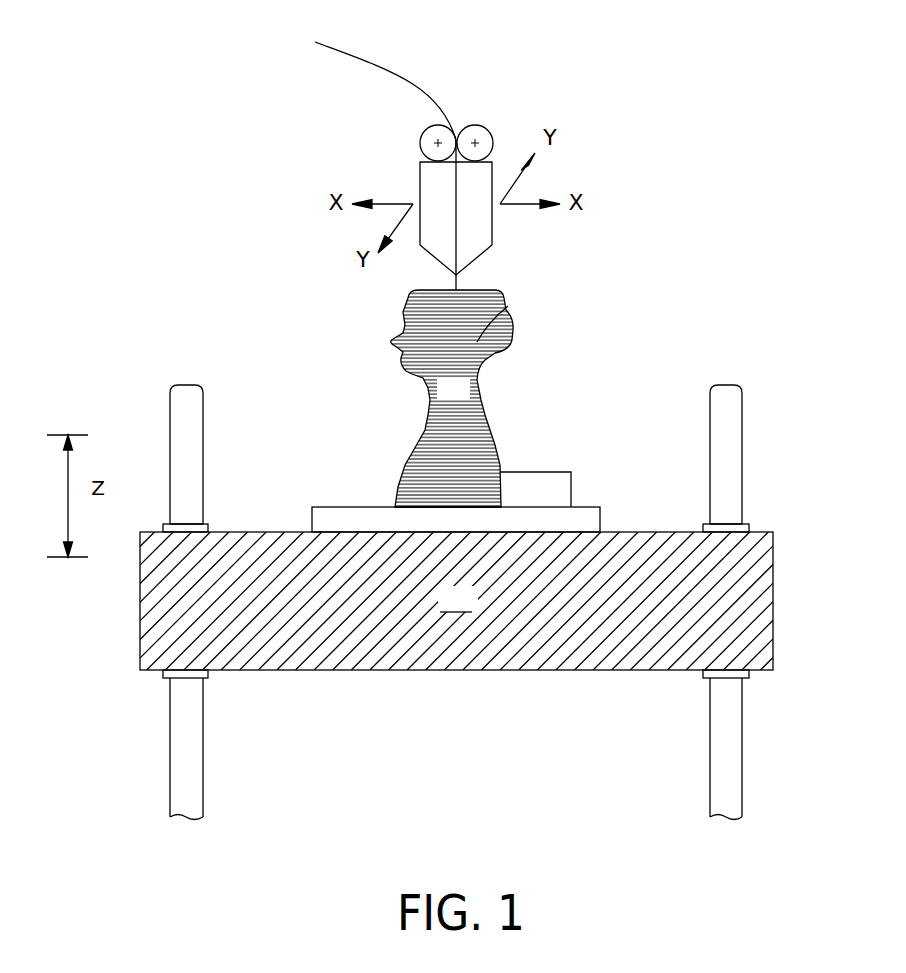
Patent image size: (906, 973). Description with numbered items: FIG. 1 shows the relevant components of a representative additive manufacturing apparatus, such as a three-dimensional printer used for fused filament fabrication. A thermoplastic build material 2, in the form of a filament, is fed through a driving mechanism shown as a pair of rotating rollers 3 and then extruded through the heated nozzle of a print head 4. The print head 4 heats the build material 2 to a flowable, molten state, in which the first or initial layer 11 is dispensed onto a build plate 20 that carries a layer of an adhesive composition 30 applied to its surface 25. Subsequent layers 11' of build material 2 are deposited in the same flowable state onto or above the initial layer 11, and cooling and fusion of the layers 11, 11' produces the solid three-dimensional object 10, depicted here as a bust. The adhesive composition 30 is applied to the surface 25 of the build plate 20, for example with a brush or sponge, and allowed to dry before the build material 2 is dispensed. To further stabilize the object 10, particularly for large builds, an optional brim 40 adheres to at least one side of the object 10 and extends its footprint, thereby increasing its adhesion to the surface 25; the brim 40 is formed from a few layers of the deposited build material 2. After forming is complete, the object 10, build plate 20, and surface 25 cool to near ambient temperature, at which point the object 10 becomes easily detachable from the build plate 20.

The thermoplastic build material 2 is at (388, 64).
The rotating rollers 3 is at (477, 125).
The print head 4 is at (492, 233).
The 3D object 10 is at (452, 398).
The initial layer 11 is at (420, 484).
The subsequent layer 11' is at (528, 319).
The build plate 20 is at (456, 601).
The surface 25 is at (258, 530).
The adhesive composition 30 is at (602, 523).
The brim 40 is at (562, 471).